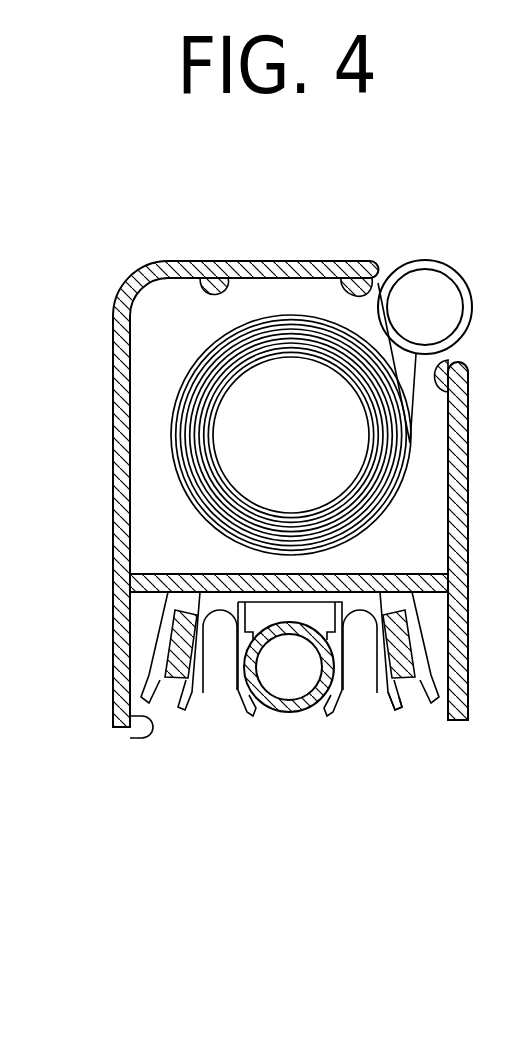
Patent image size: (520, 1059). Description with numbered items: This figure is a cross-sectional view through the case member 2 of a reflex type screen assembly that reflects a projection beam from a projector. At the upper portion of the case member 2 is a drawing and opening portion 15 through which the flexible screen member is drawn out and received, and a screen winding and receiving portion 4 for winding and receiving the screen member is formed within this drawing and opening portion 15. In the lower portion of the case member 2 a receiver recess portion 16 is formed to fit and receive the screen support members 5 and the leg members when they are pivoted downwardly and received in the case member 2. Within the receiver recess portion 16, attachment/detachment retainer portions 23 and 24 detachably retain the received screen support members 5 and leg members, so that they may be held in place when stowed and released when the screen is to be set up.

The case member 2 is at (112, 350).
The screen winding receiver portion 4 is at (206, 286).
The drawing and opening portion 15 is at (373, 270).
The receiver recess portion 16 is at (130, 738).
The attachment/detachment retainer portion 23 is at (250, 716).
The screen support member 5 is at (289, 713).
The attachment/detachment retainer portion 24 is at (393, 693).